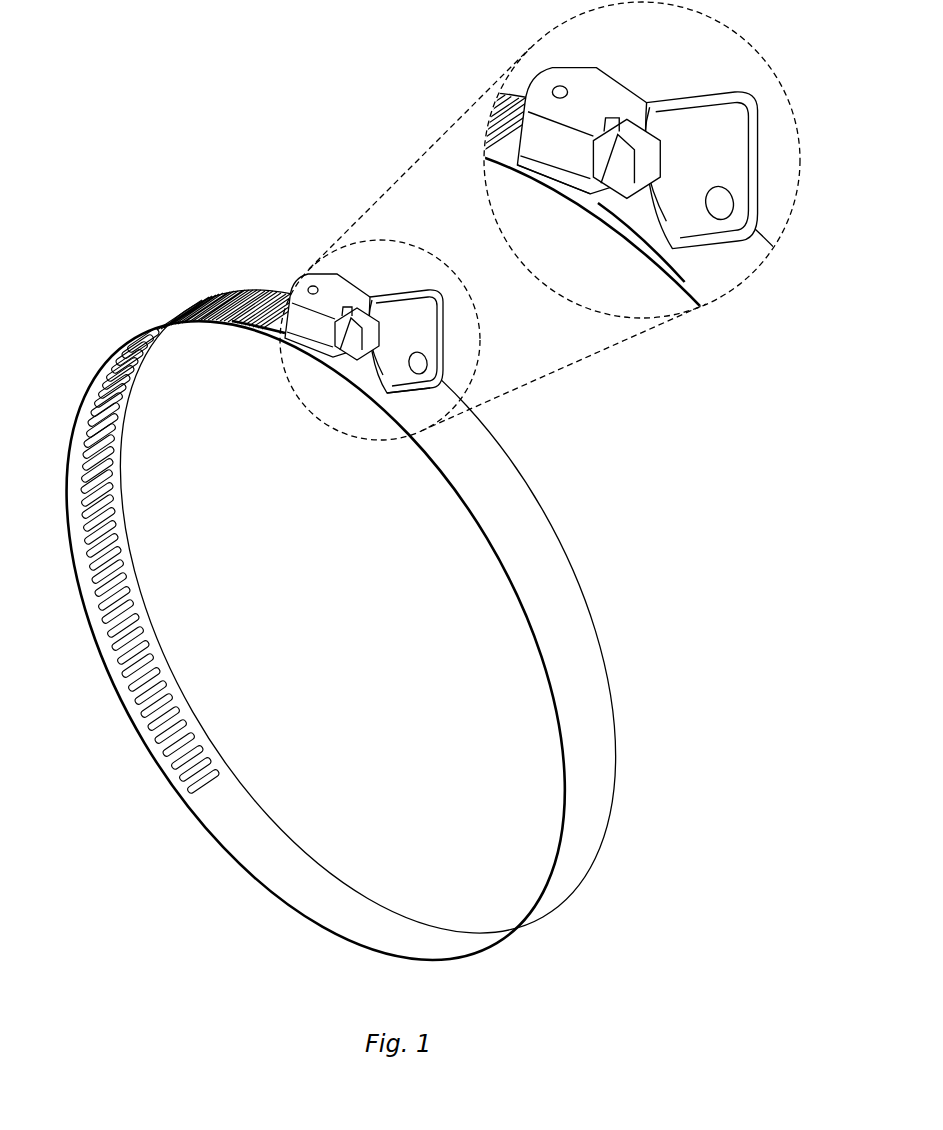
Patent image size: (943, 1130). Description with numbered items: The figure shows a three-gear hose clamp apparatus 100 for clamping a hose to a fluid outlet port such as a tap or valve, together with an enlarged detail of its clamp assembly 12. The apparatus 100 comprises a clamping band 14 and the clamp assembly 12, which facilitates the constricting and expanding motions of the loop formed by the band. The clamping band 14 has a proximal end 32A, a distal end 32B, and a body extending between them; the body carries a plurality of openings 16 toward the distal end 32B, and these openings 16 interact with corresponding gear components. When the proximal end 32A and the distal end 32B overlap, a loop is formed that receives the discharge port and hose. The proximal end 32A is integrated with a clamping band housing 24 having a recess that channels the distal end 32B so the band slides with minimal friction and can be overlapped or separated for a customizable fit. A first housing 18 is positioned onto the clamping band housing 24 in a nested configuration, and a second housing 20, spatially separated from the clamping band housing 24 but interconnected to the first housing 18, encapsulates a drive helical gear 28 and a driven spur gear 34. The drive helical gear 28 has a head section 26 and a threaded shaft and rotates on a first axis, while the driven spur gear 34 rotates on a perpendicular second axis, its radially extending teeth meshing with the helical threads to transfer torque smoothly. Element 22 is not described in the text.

The three-gear hose clamp apparatus 100 is at (196, 94).
The clamp assembly 12 is at (375, 280).
The clamping band 14 is at (151, 311).
The openings 16 is at (197, 306).
The first housing 18 is at (612, 96).
The second housing 20 is at (697, 110).
The hex nut 22 is at (645, 110).
The clamping band housing 24 is at (553, 192).
The head section 26 is at (618, 192).
The drive helical gear 28 is at (754, 112).
The proximal end 32A is at (276, 334).
The distal end 32B is at (646, 252).
The driven spur gear 34 is at (373, 371).